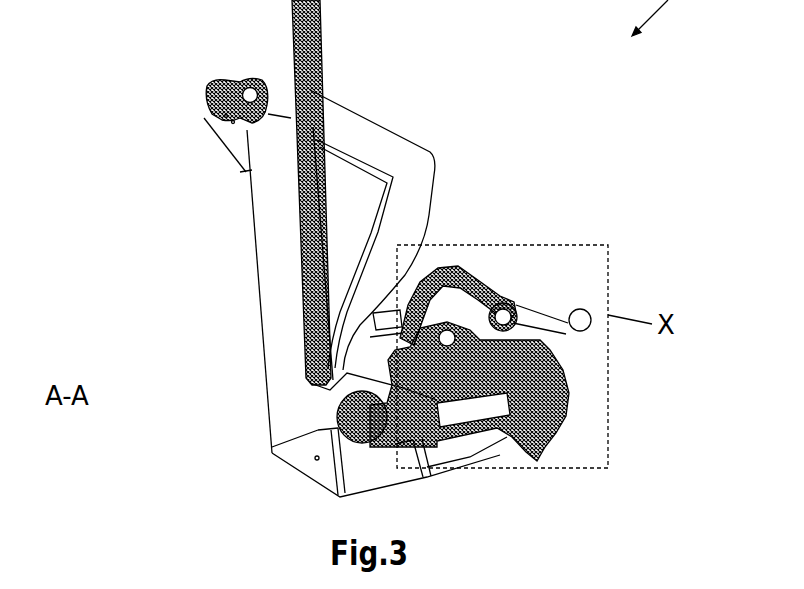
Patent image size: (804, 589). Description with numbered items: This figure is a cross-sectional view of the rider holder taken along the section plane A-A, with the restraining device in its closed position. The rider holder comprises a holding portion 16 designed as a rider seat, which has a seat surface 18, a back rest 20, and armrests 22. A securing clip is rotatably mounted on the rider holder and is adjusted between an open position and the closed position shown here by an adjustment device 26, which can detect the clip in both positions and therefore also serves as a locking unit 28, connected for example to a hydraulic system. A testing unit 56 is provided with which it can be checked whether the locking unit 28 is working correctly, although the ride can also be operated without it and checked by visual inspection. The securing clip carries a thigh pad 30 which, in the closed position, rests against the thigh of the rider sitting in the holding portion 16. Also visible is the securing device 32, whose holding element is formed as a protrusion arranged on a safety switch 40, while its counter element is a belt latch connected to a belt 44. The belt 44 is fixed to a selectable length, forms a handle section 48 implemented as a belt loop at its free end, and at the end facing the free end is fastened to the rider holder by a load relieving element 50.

The holding portion 16 is at (320, 248).
The seat surface 18 is at (308, 378).
The back rest 20 is at (233, 192).
The armrests 22 is at (392, 137).
The adjustment device 26 is at (220, 86).
The locking unit 28 is at (220, 86).
The testing unit 56 is at (243, 80).
The thigh pad 30 is at (406, 311).
The securing device 32 is at (545, 238).
The safety switch 40 is at (468, 238).
The belt 44 is at (545, 268).
The handle section 48 is at (630, 251).
The load relieving element 50 is at (516, 397).